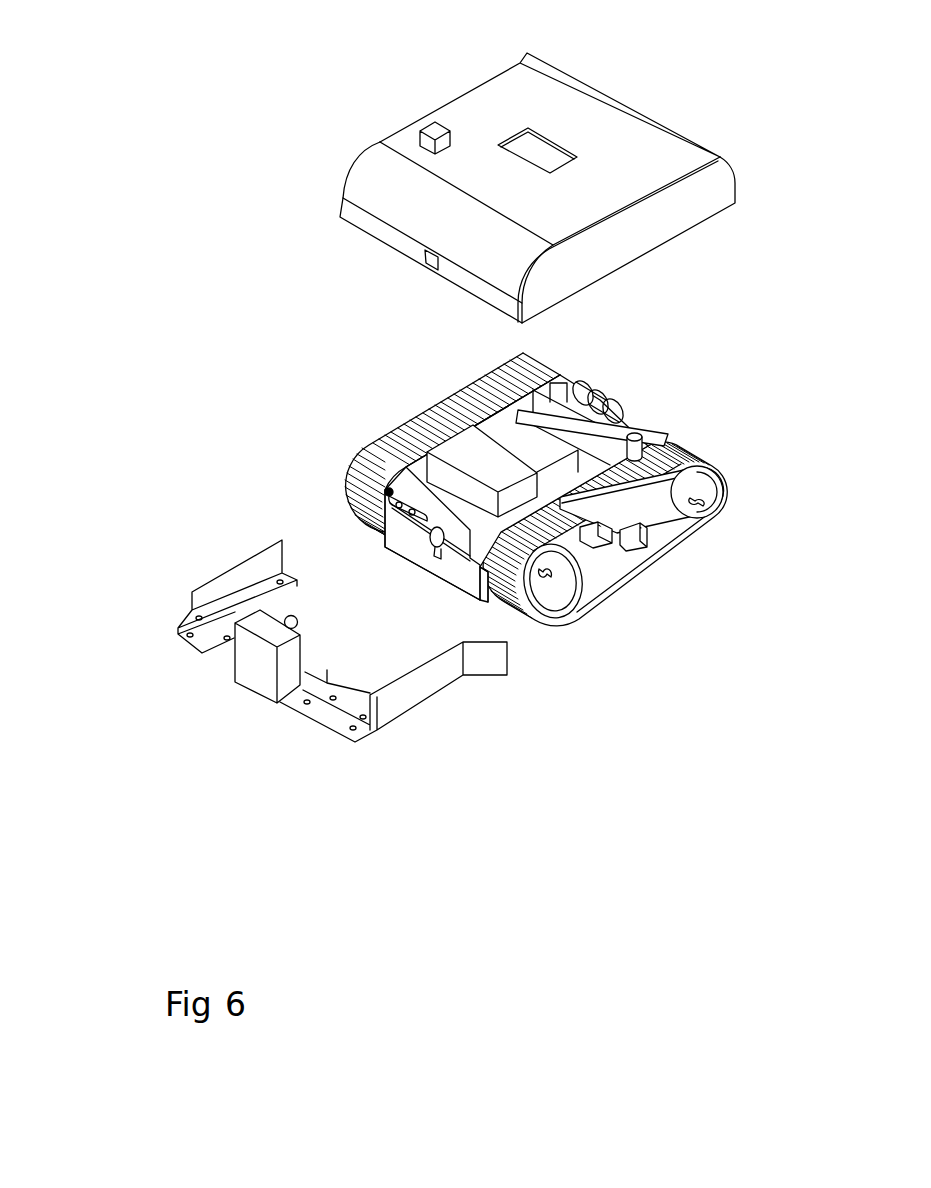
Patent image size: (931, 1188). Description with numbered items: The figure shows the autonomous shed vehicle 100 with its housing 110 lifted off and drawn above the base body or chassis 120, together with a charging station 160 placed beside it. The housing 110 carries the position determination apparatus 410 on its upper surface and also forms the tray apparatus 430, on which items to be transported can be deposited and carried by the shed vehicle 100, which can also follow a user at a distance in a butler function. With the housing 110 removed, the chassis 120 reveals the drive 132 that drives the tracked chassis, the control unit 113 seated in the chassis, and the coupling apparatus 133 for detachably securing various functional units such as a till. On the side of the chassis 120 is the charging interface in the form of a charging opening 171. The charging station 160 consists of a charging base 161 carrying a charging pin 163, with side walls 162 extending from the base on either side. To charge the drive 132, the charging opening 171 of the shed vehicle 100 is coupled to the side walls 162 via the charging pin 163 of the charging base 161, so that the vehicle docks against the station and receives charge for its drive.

The autonomous shed vehicle 100 is at (236, 260).
The housing 110 is at (703, 200).
The control unit 113 is at (470, 444).
The base body or chassis 120 is at (606, 311).
The drive 132 is at (387, 488).
The coupling apparatus 133 is at (652, 397).
The charging station 160 is at (179, 568).
The charging base 161 is at (256, 684).
The side walls 162 is at (247, 572).
The charging pin 163 is at (287, 616).
The charging opening 171 is at (425, 554).
The position determination apparatus 410 is at (428, 123).
The tray apparatus 430 is at (636, 160).